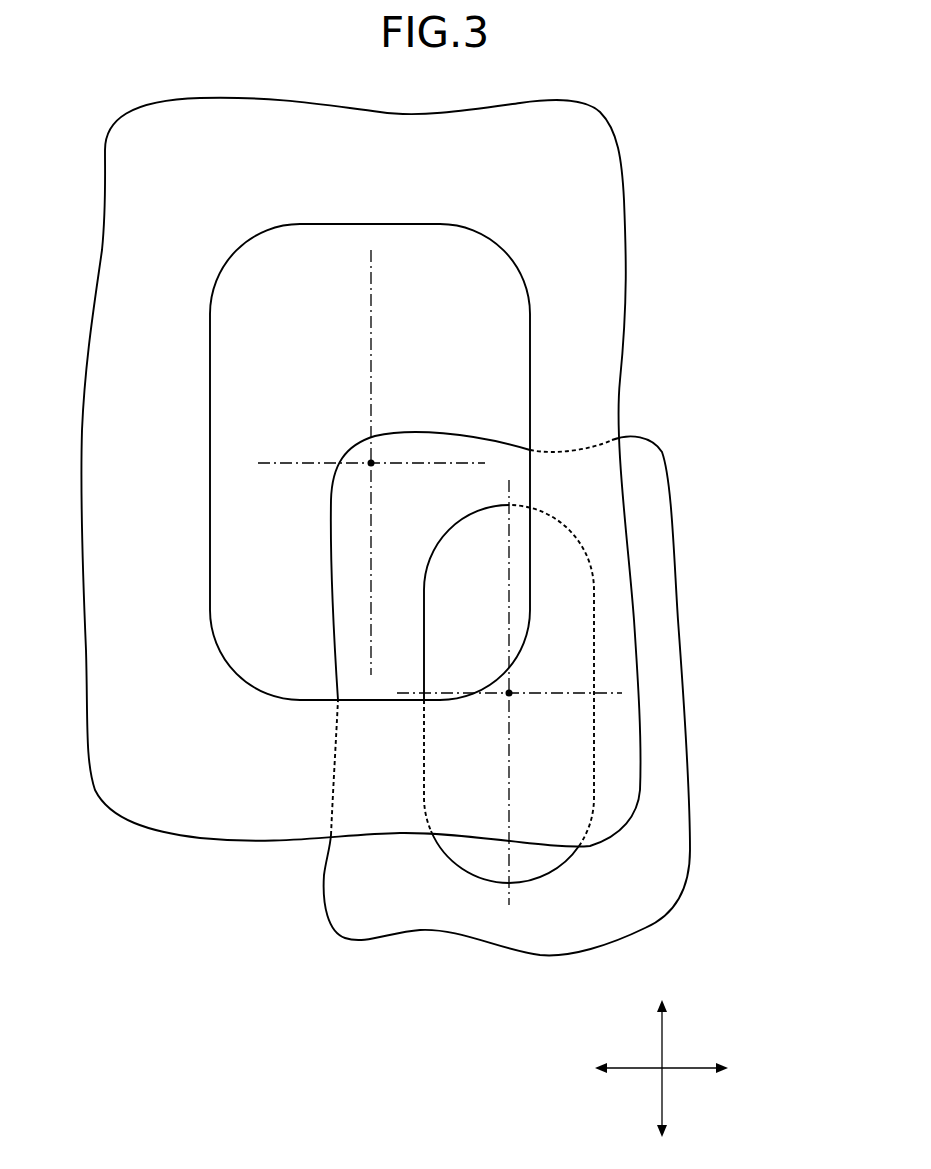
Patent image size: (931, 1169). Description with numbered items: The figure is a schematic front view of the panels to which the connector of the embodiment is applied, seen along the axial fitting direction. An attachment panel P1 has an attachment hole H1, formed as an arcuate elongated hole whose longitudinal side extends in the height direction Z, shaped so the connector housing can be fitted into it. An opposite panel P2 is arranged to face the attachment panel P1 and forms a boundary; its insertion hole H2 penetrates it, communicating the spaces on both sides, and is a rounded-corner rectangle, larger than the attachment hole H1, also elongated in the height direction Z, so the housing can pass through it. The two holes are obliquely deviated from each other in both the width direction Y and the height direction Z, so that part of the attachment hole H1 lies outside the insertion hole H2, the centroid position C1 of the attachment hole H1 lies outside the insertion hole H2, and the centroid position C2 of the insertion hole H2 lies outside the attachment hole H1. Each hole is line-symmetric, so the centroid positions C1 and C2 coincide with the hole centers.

The attachment panel P1 is at (698, 811).
The opposite panel P2 is at (625, 184).
The attachment hole H1 is at (462, 866).
The insertion hole H2 is at (257, 684).
The centroid position of the attachment hole C1 is at (511, 691).
The centroid position of the insertion hole C2 is at (371, 463).
The height direction Z is at (662, 1040).
The width direction Y is at (690, 1070).